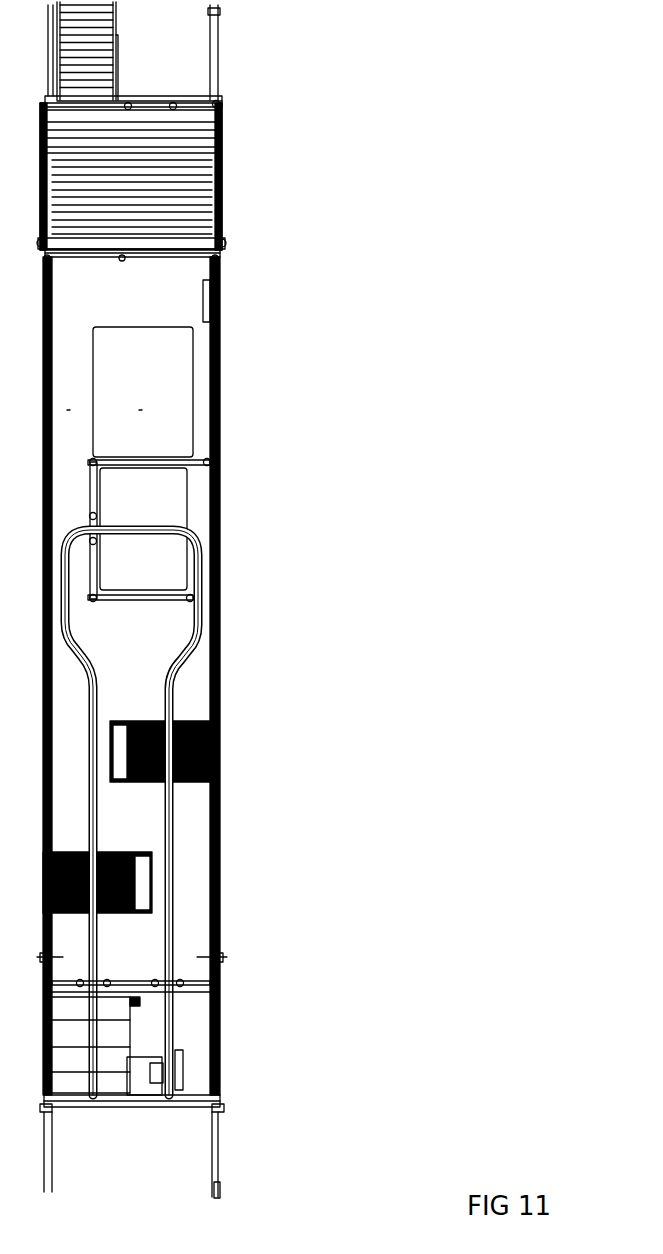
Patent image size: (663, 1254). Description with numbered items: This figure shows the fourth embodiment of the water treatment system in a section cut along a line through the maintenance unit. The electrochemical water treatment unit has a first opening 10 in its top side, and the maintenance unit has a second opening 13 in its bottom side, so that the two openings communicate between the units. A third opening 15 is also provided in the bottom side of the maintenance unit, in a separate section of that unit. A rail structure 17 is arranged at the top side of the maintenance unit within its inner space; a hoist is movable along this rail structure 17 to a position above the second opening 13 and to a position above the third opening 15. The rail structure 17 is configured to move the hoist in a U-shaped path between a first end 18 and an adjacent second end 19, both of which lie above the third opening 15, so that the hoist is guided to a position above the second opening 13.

The first opening 10 is at (155, 507).
The second opening 13 is at (149, 530).
The third opening 15 is at (184, 1031).
The rail structure 17 is at (172, 822).
The first end 18 is at (91, 1116).
The second end 19 is at (167, 1114).